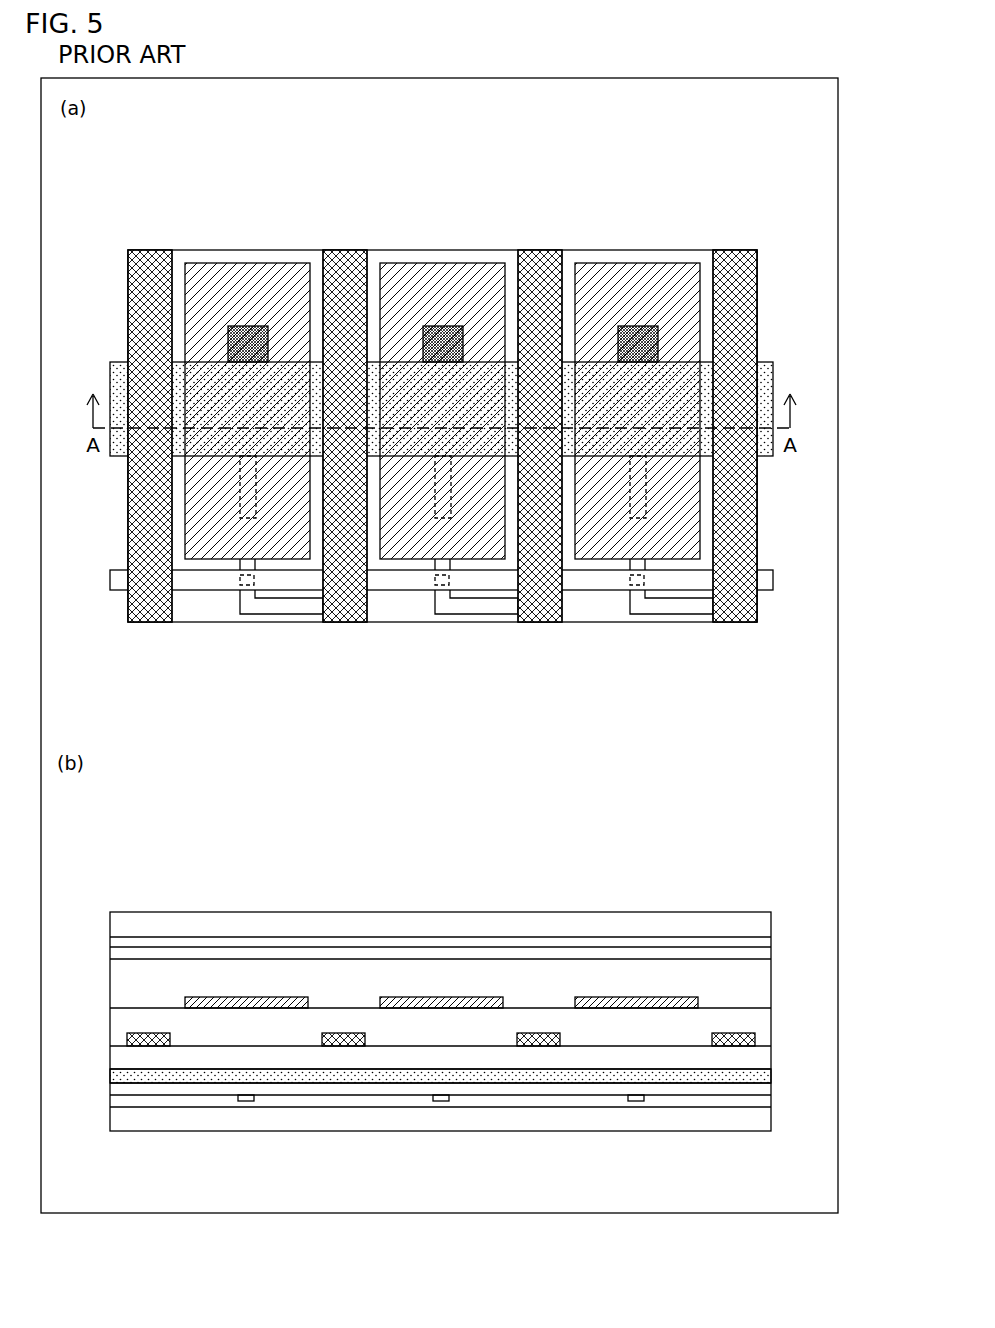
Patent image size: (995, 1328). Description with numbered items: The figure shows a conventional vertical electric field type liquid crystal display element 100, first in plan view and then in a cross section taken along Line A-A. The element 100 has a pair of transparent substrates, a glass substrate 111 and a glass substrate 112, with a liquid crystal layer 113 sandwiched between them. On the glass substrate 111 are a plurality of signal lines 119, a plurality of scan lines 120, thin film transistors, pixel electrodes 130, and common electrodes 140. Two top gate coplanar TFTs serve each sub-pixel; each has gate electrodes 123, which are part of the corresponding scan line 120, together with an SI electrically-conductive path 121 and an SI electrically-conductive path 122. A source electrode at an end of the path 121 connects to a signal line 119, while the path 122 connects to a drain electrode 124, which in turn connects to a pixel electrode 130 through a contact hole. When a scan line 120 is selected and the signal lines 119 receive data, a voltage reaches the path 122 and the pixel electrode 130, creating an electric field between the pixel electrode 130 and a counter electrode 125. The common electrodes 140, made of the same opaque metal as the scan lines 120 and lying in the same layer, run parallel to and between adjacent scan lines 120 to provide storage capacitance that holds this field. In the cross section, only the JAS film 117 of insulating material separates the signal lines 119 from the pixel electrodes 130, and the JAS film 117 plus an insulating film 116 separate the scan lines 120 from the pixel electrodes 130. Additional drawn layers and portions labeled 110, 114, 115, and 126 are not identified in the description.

The liquid crystal display element 100 is at (740, 192).
The active matrix substrate (cross section) 110 is at (740, 859).
The glass substrate 111 is at (762, 1128).
The glass substrate 112 is at (762, 921).
The liquid crystal layer 113 is at (762, 988).
The gate insulating film 114 is at (762, 1103).
The interlayer insulating film 115 is at (762, 1092).
The insulating film 116 is at (763, 1055).
The JAS film 117 is at (763, 1018).
The signal line 119 is at (343, 258).
The scan line 120 is at (592, 583).
The SI electrically-conductive path 121 is at (248, 607).
The SI electrically-conductive path 122 is at (240, 518).
The gate electrode 123 is at (239, 576).
The drain electrode 124 is at (228, 336).
The counter electrode 125 is at (765, 954).
The counter electrode 126 is at (765, 942).
The pixel electrode 130 is at (247, 270).
The common electrode 140 is at (773, 377).